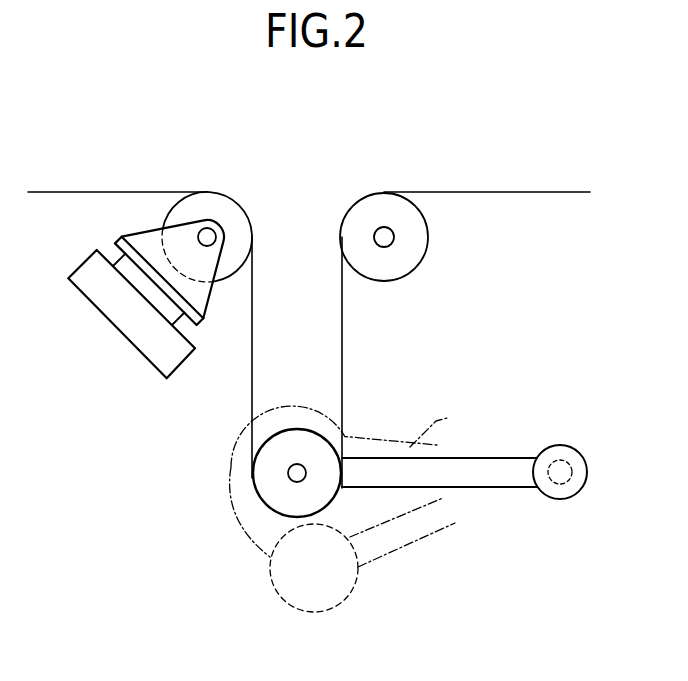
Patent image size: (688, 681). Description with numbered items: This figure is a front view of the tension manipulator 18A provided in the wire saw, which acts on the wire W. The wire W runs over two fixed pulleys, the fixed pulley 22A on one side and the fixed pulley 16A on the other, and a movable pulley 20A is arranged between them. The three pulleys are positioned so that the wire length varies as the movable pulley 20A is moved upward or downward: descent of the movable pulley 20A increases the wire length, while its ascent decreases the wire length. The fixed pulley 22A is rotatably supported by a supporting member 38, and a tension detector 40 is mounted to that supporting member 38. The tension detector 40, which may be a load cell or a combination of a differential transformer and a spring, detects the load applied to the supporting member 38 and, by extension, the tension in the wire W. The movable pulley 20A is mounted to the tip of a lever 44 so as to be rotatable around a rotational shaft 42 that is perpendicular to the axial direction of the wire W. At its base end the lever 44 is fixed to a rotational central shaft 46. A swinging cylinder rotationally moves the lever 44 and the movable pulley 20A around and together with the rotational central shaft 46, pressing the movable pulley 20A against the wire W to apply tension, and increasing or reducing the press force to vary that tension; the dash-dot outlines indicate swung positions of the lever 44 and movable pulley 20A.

The wire W is at (342, 336).
The fixed pulley 16A is at (362, 210).
The tension manipulator 18A is at (392, 468).
The movable pulley 20A is at (275, 423).
The fixed pulley 22A is at (228, 207).
The supporting member 38 is at (148, 243).
The tension detector 40 is at (130, 325).
The rotational shaft 42 is at (298, 470).
The lever 44 is at (430, 520).
The rotational central shaft 46 is at (566, 464).